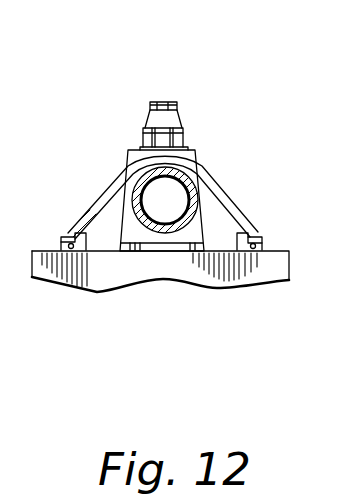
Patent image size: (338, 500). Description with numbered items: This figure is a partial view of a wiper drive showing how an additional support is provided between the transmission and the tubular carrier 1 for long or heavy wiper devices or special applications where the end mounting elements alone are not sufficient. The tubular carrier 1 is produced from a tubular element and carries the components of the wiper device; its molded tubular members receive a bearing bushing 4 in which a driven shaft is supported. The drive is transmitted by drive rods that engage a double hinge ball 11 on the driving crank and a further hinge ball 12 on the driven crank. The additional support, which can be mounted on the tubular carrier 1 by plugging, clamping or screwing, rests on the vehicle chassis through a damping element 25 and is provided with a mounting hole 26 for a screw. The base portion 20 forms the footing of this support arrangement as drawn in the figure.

The tubular carrier 1 is at (132, 168).
The bearing bushing 4 is at (167, 101).
The double hinge ball 11 is at (208, 168).
The hinge ball 12 is at (143, 180).
The base 20 is at (45, 279).
The damping element 25 is at (73, 250).
The mounting hole 26 is at (257, 252).